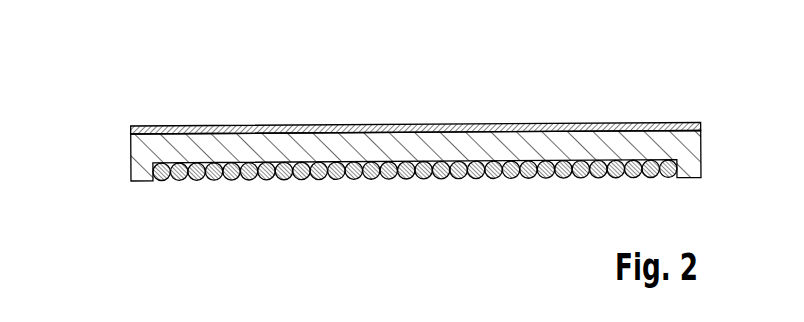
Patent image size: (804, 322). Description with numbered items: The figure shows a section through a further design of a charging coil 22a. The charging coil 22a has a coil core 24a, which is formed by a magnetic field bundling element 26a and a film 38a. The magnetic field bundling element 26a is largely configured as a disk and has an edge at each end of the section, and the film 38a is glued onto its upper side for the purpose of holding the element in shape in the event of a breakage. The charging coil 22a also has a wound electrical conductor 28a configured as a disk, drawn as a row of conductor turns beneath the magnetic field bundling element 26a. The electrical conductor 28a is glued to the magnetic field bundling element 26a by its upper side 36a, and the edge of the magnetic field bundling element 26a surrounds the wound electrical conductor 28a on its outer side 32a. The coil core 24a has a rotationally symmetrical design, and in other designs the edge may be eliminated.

The charging coil 22a is at (652, 73).
The coil core 24a is at (121, 142).
The magnetic field bundling element 26a is at (320, 137).
The wound electrical conductor 28a is at (352, 168).
The outer side 32a is at (677, 180).
The upper side 36a is at (432, 168).
The film 38a is at (230, 126).